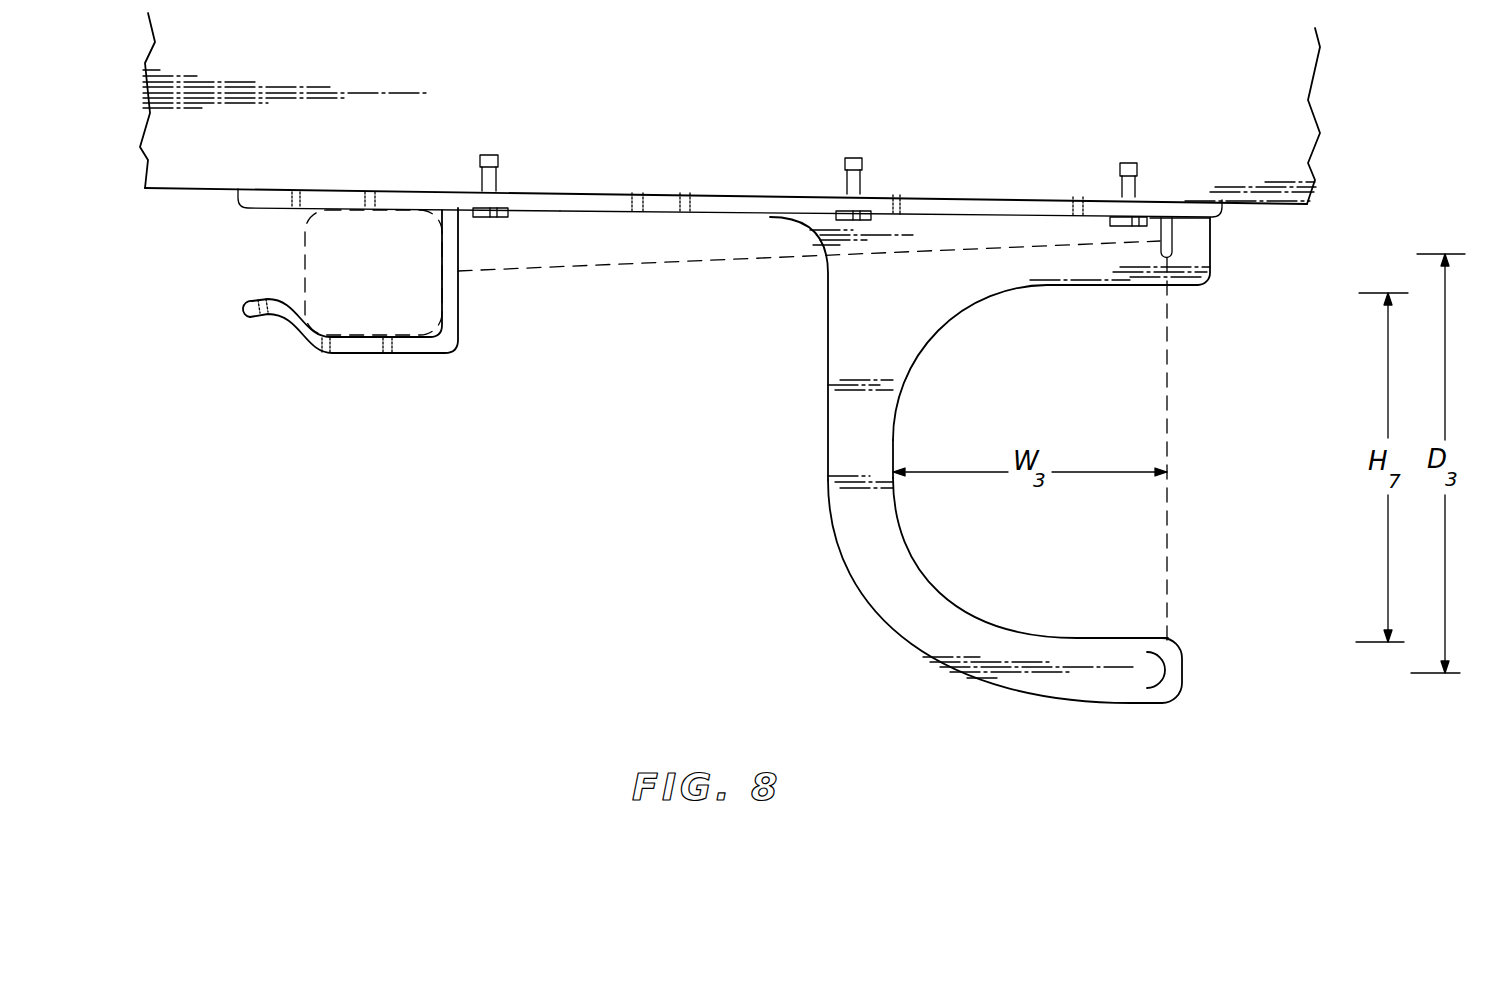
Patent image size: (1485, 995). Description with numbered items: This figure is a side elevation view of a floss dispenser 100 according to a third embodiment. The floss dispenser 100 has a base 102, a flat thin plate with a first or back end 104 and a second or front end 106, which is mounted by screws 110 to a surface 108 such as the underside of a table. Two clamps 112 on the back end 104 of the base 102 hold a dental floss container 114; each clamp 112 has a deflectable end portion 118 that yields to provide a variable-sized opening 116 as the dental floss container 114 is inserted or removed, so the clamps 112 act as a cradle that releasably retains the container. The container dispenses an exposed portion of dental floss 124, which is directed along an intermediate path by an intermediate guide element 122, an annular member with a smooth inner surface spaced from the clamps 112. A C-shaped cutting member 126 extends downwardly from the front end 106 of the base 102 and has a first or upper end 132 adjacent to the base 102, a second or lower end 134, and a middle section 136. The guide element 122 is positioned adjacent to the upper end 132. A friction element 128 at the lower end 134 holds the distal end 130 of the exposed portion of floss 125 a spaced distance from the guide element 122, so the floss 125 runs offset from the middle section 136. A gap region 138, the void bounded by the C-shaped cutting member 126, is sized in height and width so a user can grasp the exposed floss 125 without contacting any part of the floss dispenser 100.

The floss dispenser 100 is at (687, 546).
The base 102 is at (660, 202).
The first or back end 104 is at (337, 198).
The second or front end 106 is at (1178, 208).
The surface 108 is at (1292, 205).
The screws 110 is at (498, 160).
The clamps 112 is at (445, 335).
The dental floss container 114 is at (373, 303).
The variable-sized opening 116 is at (280, 252).
The deflectable end portion 118 is at (243, 316).
The intermediate guide element 122 is at (1163, 237).
The exposed portion of dental floss 124 is at (607, 265).
The exposed portion of floss 125 is at (1169, 397).
The cutting member 126 is at (826, 410).
The friction element 128 is at (1147, 668).
The distal end 130 is at (1168, 635).
The first or upper end 132 is at (1075, 262).
The second or lower end 134 is at (1105, 687).
The middle section 136 is at (867, 445).
The gap region 138 is at (1067, 565).